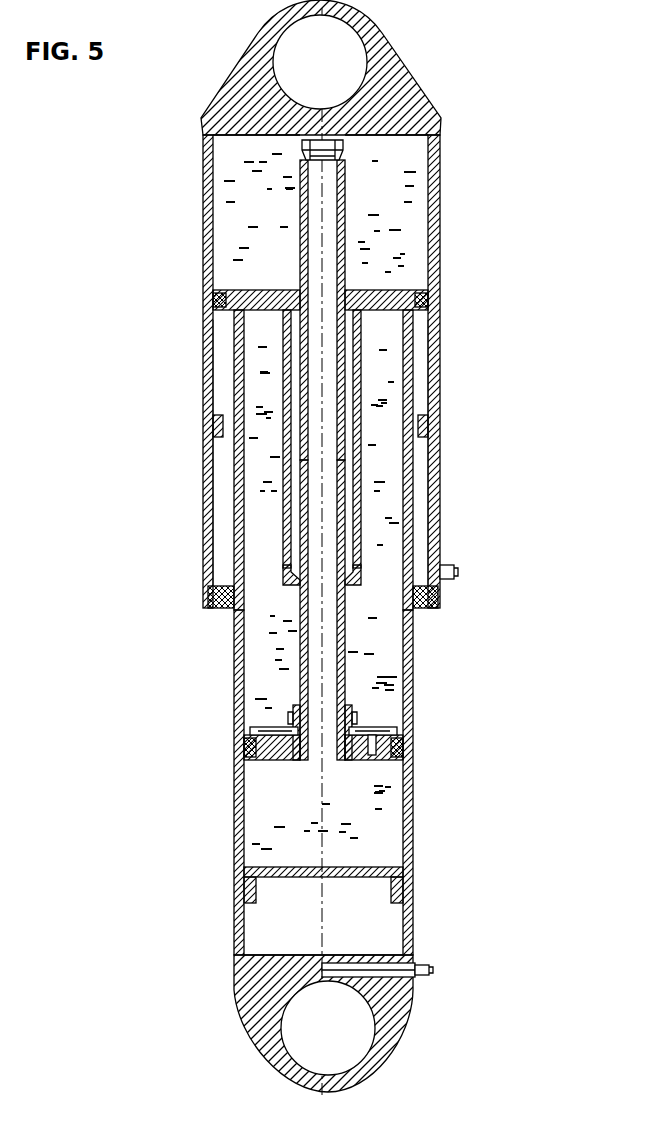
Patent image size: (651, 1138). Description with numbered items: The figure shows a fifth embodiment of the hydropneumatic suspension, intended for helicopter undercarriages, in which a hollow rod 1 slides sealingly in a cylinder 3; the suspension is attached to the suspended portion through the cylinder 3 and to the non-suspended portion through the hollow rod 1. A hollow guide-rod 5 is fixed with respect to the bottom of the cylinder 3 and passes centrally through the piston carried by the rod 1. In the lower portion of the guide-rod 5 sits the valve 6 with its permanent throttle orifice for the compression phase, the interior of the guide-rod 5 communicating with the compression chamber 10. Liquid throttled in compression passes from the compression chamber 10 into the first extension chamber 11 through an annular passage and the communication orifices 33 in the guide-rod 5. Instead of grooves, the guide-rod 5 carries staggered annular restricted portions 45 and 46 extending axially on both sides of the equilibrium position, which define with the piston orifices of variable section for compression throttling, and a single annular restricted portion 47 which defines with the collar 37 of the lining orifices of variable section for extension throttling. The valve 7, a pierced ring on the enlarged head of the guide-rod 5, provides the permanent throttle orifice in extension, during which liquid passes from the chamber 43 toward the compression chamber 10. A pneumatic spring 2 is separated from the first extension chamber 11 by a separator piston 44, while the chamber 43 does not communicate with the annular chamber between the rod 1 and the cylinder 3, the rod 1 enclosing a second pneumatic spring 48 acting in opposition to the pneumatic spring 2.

The hollow rod 1 is at (413, 797).
The pneumatic spring 2 is at (368, 929).
The cylinder 3 is at (442, 378).
The hollow guide-rod 5 is at (403, 537).
The valve 6 is at (322, 172).
The valve 7 is at (375, 712).
The compression chamber 10 is at (402, 184).
The first extension chamber 11 is at (373, 829).
The communication orifices 33 is at (358, 430).
The collar 37 is at (287, 572).
The chamber 43 is at (262, 477).
The separator piston 44 is at (243, 877).
The annular restricted portion 45 is at (302, 213).
The annular restricted portion 46 is at (298, 315).
The annular restricted portion 47 is at (303, 668).
The second pneumatic spring 48 is at (230, 553).